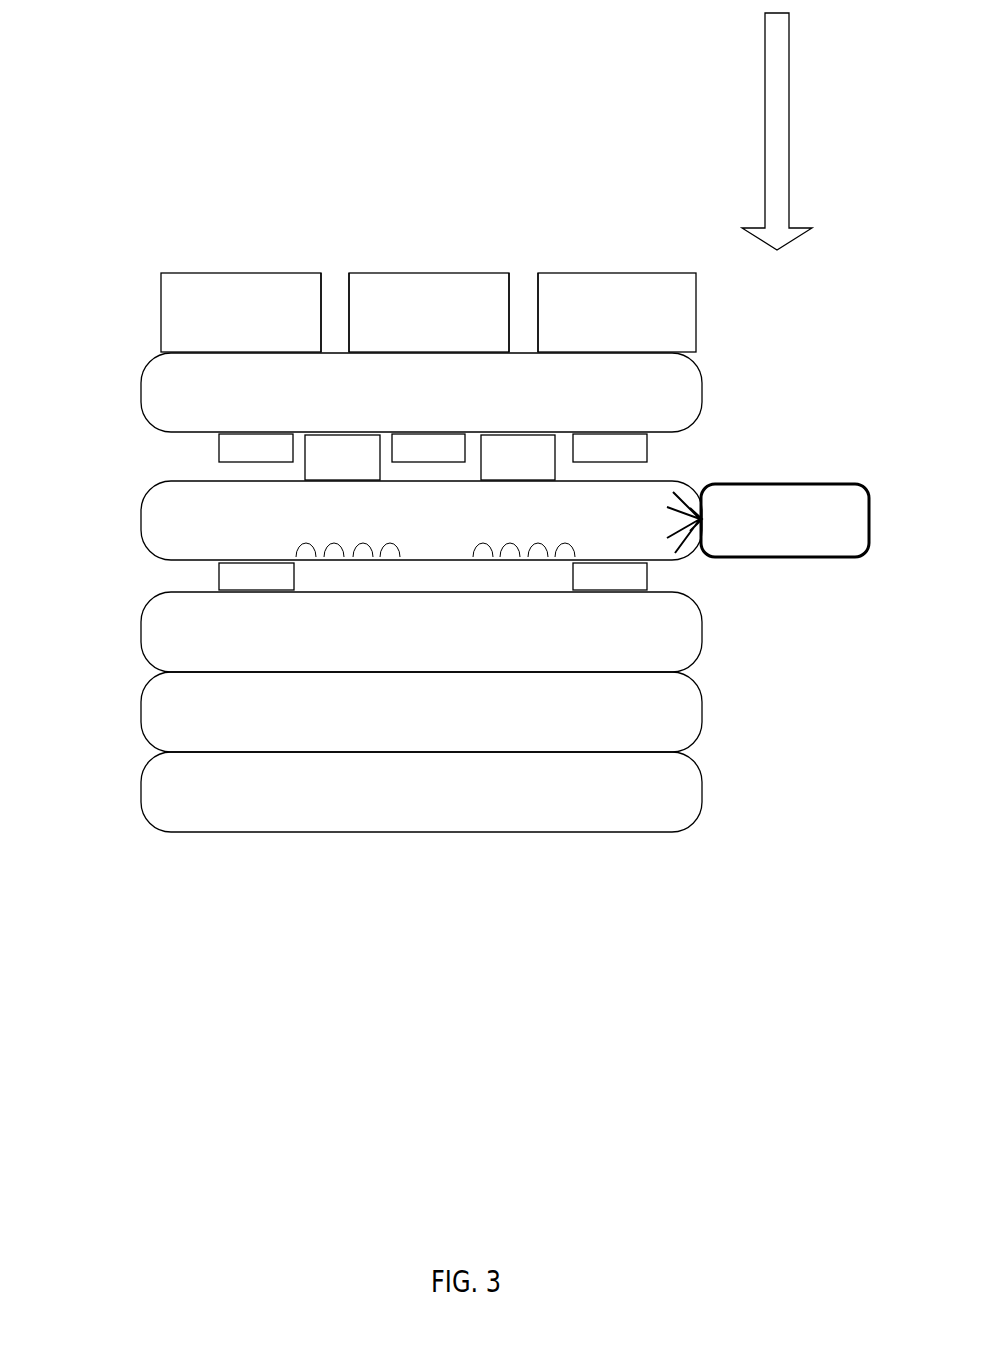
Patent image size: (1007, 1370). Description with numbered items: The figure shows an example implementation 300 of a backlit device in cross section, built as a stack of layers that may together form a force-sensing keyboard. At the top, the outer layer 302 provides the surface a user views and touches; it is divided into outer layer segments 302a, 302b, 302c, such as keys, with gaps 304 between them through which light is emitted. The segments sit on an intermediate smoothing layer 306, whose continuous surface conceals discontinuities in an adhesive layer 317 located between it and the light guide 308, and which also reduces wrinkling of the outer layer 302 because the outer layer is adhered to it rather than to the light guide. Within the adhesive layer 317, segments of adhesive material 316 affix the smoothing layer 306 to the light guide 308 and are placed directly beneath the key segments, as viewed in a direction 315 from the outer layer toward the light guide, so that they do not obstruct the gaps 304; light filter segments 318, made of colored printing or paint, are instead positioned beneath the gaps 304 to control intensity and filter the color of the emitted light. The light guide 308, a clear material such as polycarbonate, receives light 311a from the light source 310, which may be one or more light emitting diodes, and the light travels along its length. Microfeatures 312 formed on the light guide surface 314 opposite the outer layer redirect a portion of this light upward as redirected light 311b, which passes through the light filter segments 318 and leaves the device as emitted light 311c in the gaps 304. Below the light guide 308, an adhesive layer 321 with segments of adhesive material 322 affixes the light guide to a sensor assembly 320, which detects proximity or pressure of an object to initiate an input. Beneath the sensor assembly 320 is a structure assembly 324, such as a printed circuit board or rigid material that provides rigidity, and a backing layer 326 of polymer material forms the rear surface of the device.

The example implementation 300 is at (200, 125).
The outer layer 302 is at (370, 309).
The outer layer segment 302a is at (241, 312).
The outer layer segment 302b is at (429, 312).
The outer layer segment 302c is at (617, 312).
The gaps 304 is at (333, 289).
The smoothing layer 306 is at (421, 392).
The light guide 308 is at (421, 520).
The light source 310 is at (785, 520).
The light 311a is at (683, 545).
The redirected light 311b is at (552, 507).
The emitted light 311c is at (345, 325).
The microfeatures 312 is at (297, 540).
The light guide surface 314 is at (200, 561).
The direction 315 is at (775, 52).
The adhesive material 316 is at (433, 448).
The adhesive layer 317 is at (185, 452).
The light filter segments 318 is at (430, 457).
The sensor assembly 320 is at (421, 632).
The adhesive layer 321 is at (183, 578).
The adhesive material 322 is at (433, 576).
The structure assembly 324 is at (421, 712).
The backing layer 326 is at (421, 792).